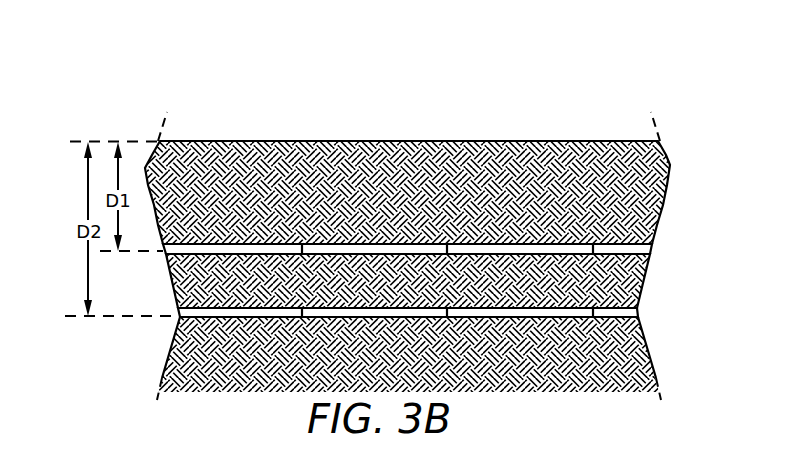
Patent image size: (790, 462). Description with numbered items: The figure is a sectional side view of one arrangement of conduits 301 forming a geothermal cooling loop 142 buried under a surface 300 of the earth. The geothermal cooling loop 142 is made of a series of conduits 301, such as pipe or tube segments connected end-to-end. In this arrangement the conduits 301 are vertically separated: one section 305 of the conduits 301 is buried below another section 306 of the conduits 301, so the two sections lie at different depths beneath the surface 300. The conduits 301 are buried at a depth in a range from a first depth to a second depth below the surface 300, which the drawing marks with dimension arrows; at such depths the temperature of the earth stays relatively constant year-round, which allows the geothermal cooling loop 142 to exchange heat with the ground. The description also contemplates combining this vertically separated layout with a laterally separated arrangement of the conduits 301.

The surface of the earth 300 is at (297, 141).
The section of the conduits 306 is at (341, 244).
The section of the conduits 305 is at (243, 318).
The conduits 301 is at (376, 318).
The geothermal cooling loop 142 is at (497, 337).